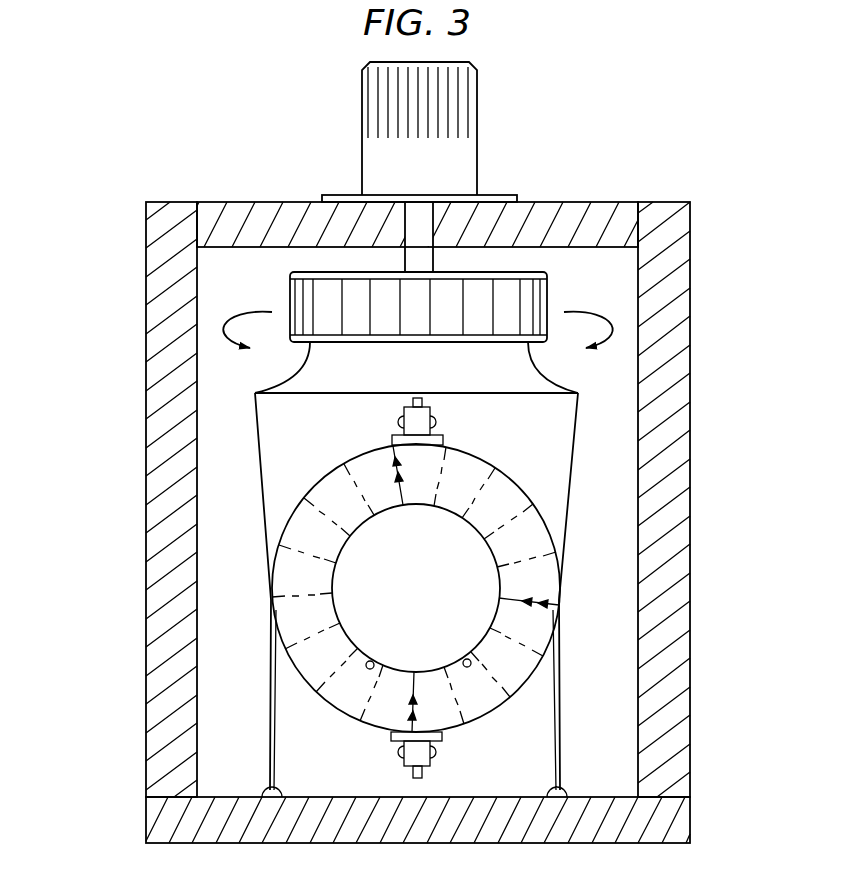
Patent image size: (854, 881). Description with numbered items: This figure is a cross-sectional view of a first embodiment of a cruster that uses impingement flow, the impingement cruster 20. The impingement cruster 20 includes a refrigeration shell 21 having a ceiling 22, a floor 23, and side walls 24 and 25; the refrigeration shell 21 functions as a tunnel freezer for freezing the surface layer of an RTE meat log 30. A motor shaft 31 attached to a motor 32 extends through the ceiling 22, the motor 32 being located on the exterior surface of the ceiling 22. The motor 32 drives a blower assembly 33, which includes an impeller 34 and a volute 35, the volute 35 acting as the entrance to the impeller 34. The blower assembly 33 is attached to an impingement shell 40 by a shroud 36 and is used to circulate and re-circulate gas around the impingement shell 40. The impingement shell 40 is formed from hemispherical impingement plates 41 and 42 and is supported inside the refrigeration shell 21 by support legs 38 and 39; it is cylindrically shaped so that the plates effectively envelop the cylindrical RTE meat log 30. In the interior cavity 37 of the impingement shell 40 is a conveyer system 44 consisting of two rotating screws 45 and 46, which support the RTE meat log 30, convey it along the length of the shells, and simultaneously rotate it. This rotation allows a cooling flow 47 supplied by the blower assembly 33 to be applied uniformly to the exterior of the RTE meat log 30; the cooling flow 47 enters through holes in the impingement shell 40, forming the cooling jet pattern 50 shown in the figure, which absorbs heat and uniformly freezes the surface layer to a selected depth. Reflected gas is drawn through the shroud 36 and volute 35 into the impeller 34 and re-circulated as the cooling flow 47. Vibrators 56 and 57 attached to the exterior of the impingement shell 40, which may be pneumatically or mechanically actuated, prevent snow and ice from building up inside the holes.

The impingement cruster 20 is at (128, 181).
The refrigeration shell 21 is at (414, 489).
The ceiling 22 is at (246, 213).
The floor 23 is at (189, 838).
The side wall 24 is at (152, 540).
The side wall 25 is at (677, 526).
The RTE meat log 30 is at (410, 610).
The motor shaft 31 is at (422, 226).
The motor 32 is at (462, 154).
The blower assembly 33 is at (327, 248).
The impeller 34 is at (507, 295).
The volute 35 is at (302, 375).
The shroud 36 is at (272, 437).
The interior cavity 37 is at (532, 537).
The support leg 38 is at (268, 716).
The support leg 39 is at (562, 722).
The impingement shell 40 is at (512, 698).
The hemispherical impingement plate 41 is at (289, 659).
The hemispherical impingement plate 42 is at (484, 460).
The conveyer system 44 is at (355, 670).
The rotating screw 45 is at (369, 670).
The rotating screw 46 is at (468, 668).
The cooling flow 47 is at (622, 320).
The cooling jet pattern 50 is at (318, 556).
The vibrator 56 is at (425, 424).
The vibrator 57 is at (417, 762).